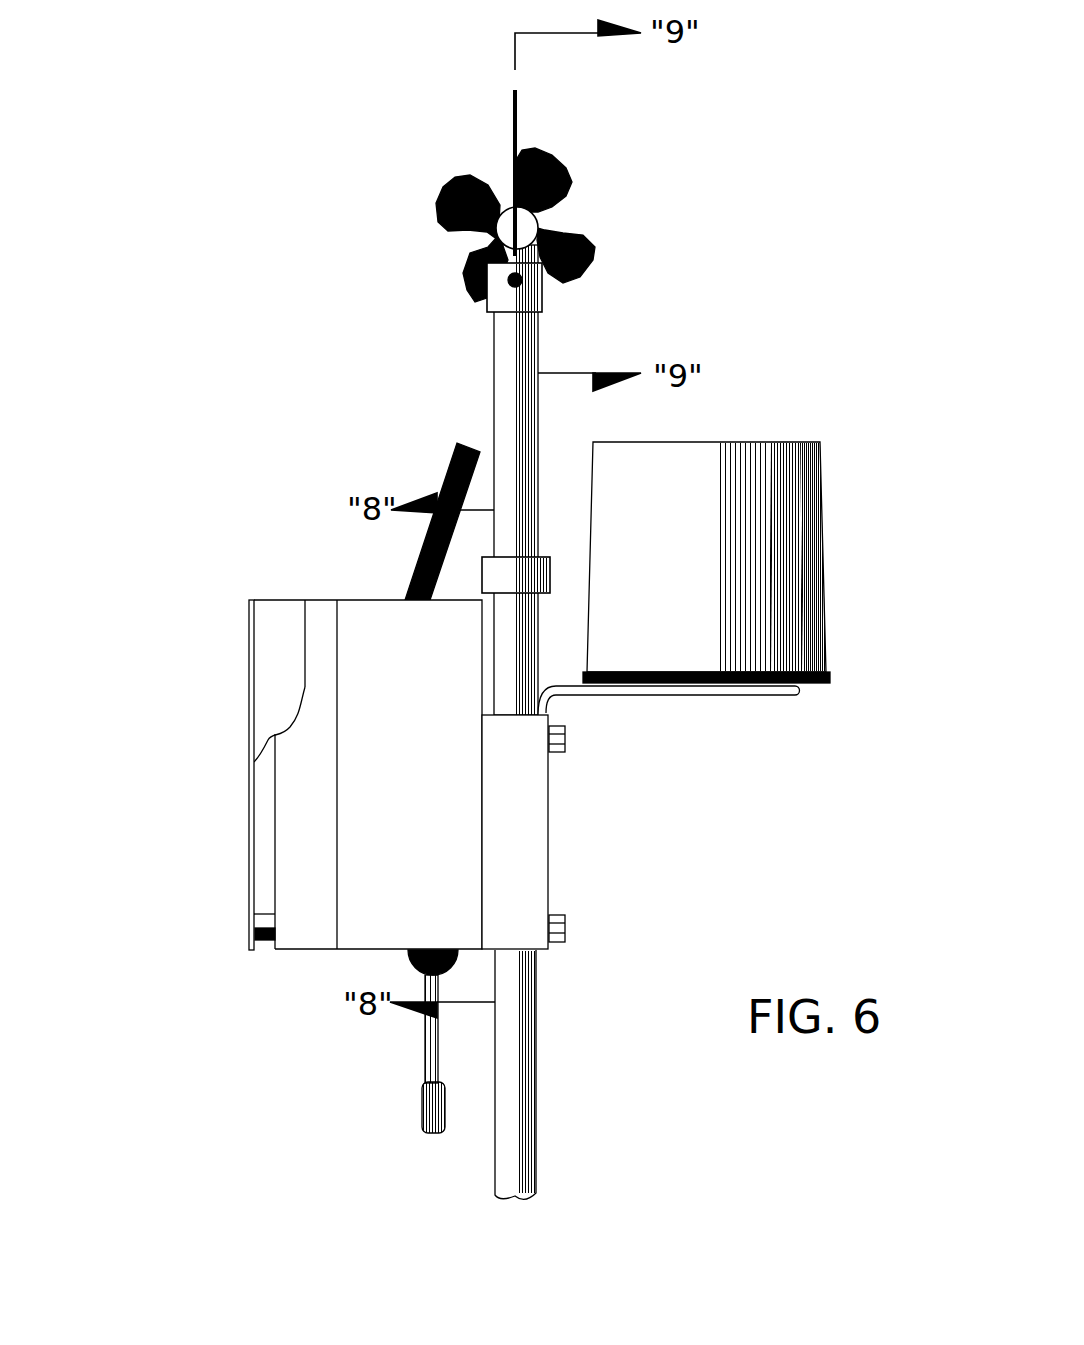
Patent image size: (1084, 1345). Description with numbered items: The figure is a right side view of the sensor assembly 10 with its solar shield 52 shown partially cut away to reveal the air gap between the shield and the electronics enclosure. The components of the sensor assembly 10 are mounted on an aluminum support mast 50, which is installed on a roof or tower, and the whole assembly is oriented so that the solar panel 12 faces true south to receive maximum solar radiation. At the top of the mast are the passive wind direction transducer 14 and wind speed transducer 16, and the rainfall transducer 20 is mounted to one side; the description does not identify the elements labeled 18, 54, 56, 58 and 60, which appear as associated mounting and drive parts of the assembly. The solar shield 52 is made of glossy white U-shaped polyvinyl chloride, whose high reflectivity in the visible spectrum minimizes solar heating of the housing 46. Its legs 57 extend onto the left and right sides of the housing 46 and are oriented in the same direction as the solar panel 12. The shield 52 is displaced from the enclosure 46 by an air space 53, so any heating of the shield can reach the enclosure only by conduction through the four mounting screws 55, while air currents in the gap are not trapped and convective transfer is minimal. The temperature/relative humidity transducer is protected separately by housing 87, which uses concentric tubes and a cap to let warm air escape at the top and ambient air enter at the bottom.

The sensor assembly 10 is at (291, 356).
The solar panel 12 is at (445, 468).
The wind direction transducer 14 is at (543, 305).
The wind speed transducer 16 is at (523, 230).
The shaft 18 is at (522, 447).
The rainfall transducer 20 is at (778, 540).
The housing 46 is at (294, 790).
The support mast 50 is at (510, 1093).
The solar shield 52 is at (275, 620).
The air space 53 is at (262, 863).
The mounting box 54 is at (523, 932).
The mounting screws 55 is at (250, 938).
The bolts 56 is at (567, 745).
The legs 57 is at (285, 667).
The support arm 58 is at (567, 688).
The propeller 60 is at (595, 258).
The housing 87 is at (515, 630).